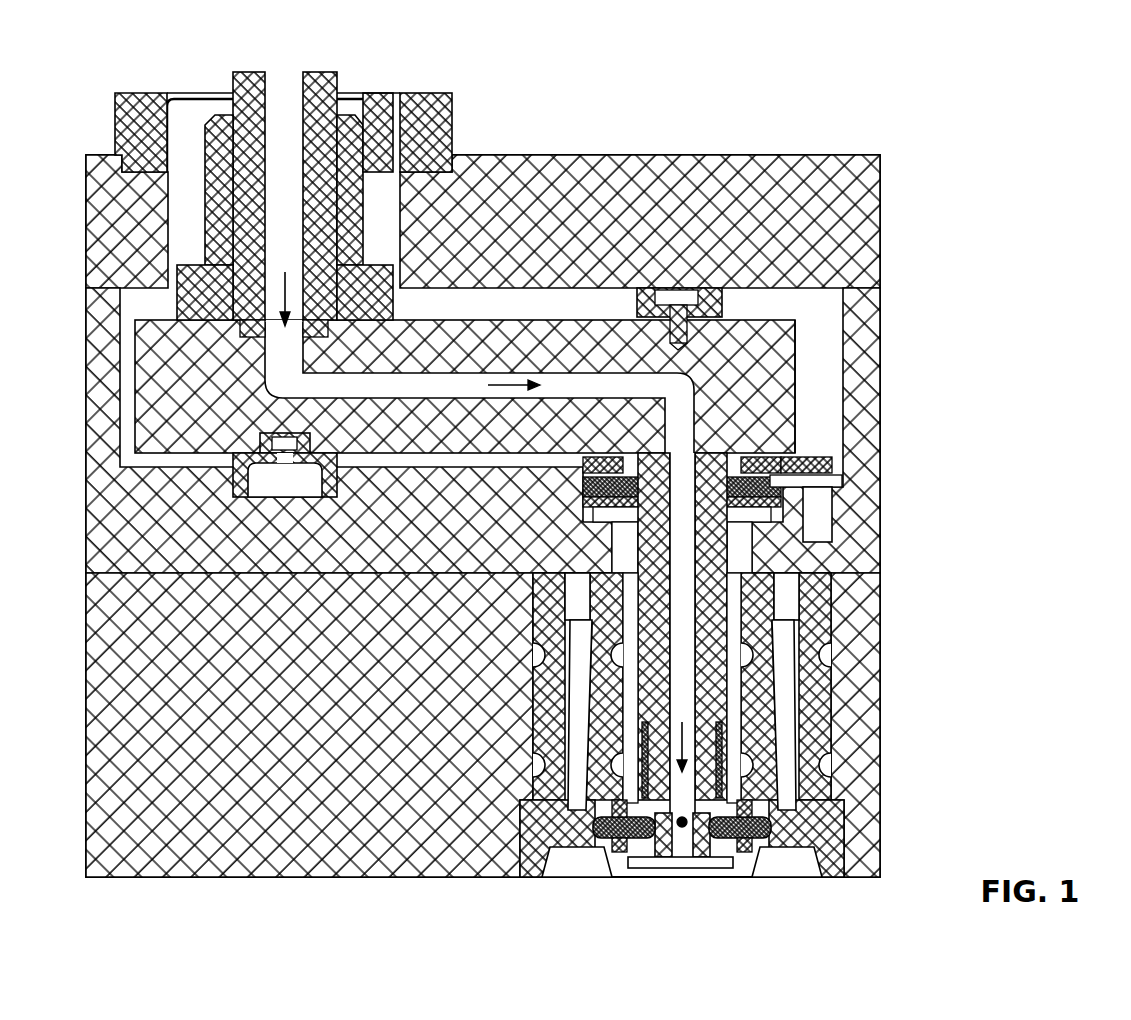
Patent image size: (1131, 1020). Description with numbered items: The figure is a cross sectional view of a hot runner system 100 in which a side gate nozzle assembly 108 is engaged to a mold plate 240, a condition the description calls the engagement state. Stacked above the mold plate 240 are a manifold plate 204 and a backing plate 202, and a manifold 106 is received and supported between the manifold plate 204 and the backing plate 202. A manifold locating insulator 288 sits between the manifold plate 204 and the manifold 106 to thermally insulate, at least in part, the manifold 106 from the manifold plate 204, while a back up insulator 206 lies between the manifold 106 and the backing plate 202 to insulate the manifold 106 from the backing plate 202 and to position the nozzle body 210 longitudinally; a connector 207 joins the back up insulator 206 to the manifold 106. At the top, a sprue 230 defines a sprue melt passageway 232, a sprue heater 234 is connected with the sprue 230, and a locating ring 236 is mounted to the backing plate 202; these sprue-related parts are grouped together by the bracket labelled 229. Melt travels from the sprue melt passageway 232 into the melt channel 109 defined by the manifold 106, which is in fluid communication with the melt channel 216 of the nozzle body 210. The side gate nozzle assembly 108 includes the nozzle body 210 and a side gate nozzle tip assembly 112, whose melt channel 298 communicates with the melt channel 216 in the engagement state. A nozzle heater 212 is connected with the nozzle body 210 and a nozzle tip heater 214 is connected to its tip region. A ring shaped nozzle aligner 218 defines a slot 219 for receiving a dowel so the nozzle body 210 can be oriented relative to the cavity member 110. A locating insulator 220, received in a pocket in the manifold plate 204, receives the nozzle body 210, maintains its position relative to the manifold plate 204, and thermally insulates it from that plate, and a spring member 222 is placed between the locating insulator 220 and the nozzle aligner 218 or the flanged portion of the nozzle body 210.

The hot runner system 100 is at (986, 132).
The manifold 106 is at (518, 359).
The side gate nozzle assembly 108 is at (580, 850).
The melt channel 109 is at (688, 405).
The cavity member 110 is at (545, 705).
The side gate nozzle tip assembly 112 is at (598, 830).
The backing plate 202 is at (556, 245).
The manifold plate 204 is at (466, 544).
The back up insulator 206 is at (657, 290).
The connector 207 is at (688, 296).
The nozzle body 210 is at (728, 592).
The nozzle heater 212 is at (748, 572).
The nozzle tip heater 214 is at (724, 797).
The melt channel 216 is at (770, 418).
The nozzle aligner 218 is at (832, 470).
The slot 219 is at (808, 457).
The locating insulator 220 is at (835, 520).
The spring member 222 is at (820, 495).
The inlet fitting assembly 229 is at (377, 182).
The sprue 230 is at (330, 80).
The sprue melt passageway 232 is at (288, 115).
The sprue heater 234 is at (345, 125).
The locating ring 236 is at (385, 147).
The mold plate 240 is at (324, 712).
The manifold locating insulator 288 is at (245, 497).
The melt channel 298 is at (637, 848).